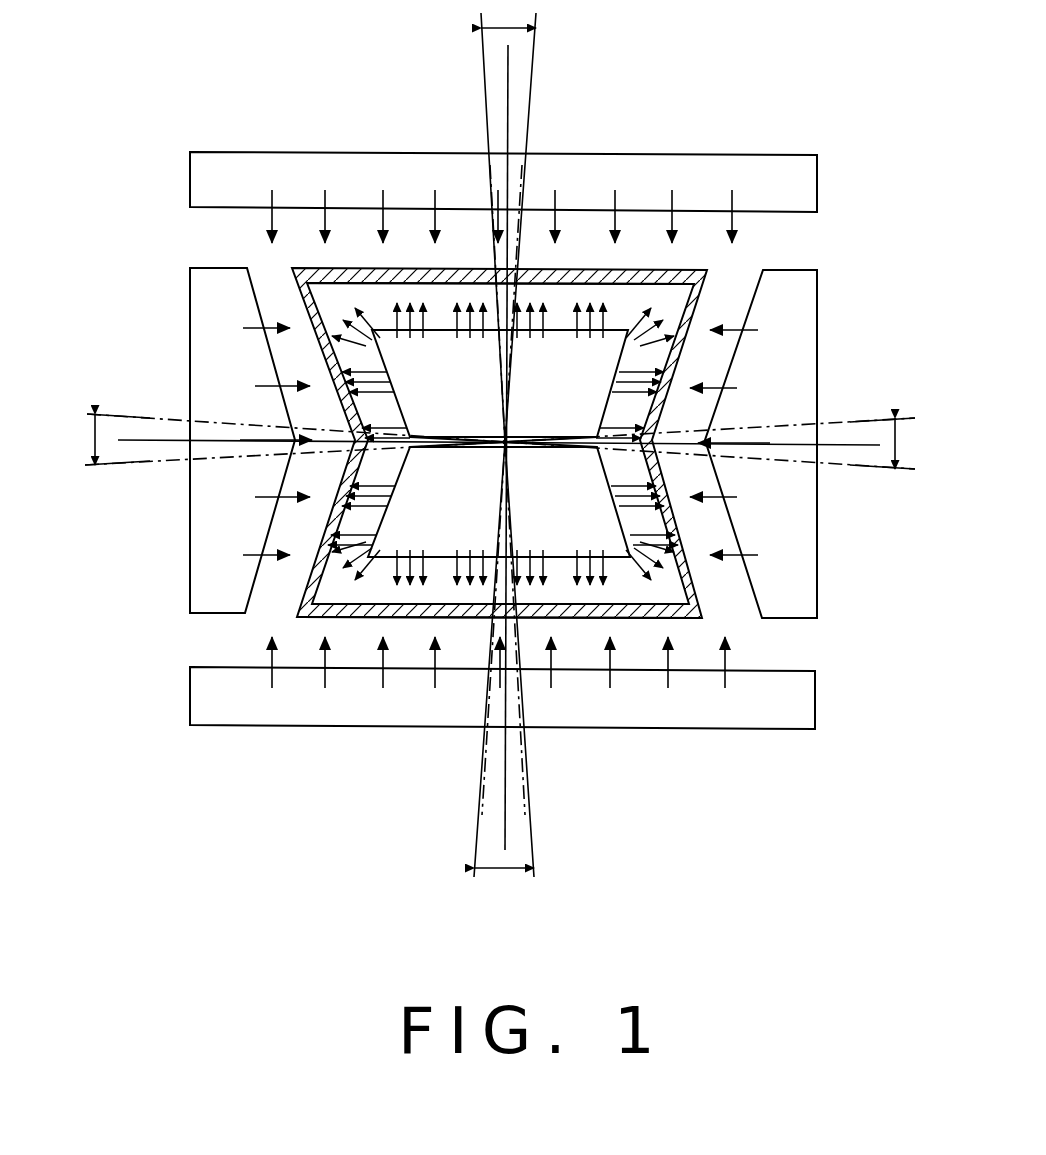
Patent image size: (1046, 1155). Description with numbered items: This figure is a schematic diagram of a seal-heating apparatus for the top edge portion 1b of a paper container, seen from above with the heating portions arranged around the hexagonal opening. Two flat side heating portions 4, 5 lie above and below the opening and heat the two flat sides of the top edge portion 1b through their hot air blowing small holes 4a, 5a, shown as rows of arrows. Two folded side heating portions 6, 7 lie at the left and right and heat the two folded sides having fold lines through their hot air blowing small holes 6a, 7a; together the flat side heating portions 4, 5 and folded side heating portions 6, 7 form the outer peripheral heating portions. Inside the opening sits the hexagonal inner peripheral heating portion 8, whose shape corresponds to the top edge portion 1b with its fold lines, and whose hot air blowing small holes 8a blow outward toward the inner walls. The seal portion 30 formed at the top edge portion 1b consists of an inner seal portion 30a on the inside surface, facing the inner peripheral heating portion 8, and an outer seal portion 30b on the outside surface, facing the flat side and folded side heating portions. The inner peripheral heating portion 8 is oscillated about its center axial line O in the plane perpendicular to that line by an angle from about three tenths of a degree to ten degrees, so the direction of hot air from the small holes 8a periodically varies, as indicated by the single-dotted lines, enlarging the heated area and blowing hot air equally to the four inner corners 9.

The flat side heating portion 4 is at (648, 168).
The hot air blowing small holes 4a is at (272, 199).
The flat side heating portion 5 is at (650, 729).
The hot air blowing small holes 5a is at (262, 680).
The folded side heating portion 6 is at (190, 540).
The hot air blowing small holes 6a is at (262, 330).
The folded side heating portion 7 is at (800, 542).
The hot air blowing small holes 7a is at (733, 376).
The inner peripheral heating portion 8 is at (470, 388).
The hot air blowing small holes 8a is at (417, 538).
The inner corners 9 is at (320, 292).
The top edge portion 1b is at (614, 270).
The seal portion 30 is at (499, 549).
The inner seal portion 30a is at (422, 604).
The outer seal portion 30b is at (357, 618).
The axial line O is at (506, 440).